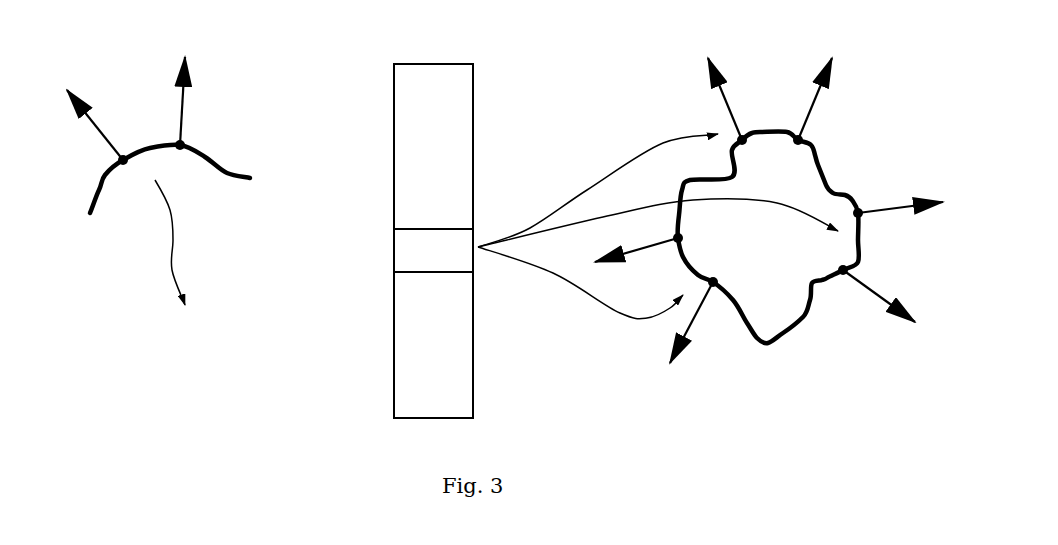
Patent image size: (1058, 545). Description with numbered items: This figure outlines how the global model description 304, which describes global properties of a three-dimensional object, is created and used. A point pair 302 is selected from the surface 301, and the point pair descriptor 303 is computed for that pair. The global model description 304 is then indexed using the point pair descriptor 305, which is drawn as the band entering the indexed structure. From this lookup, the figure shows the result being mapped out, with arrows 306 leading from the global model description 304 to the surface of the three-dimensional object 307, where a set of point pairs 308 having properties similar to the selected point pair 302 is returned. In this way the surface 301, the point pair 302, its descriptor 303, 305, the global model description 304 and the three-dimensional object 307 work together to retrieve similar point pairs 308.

The surface 301 is at (159, 195).
The point pair 302 is at (126, 111).
The point pair descriptor 303 is at (191, 288).
The global model description 304 is at (433, 259).
The point pair descriptor 305 is at (233, 345).
The mapping arrows to deformed contour 306 is at (658, 226).
The 3D object 307 is at (768, 254).
The force vectors on contour points 308 is at (769, 210).